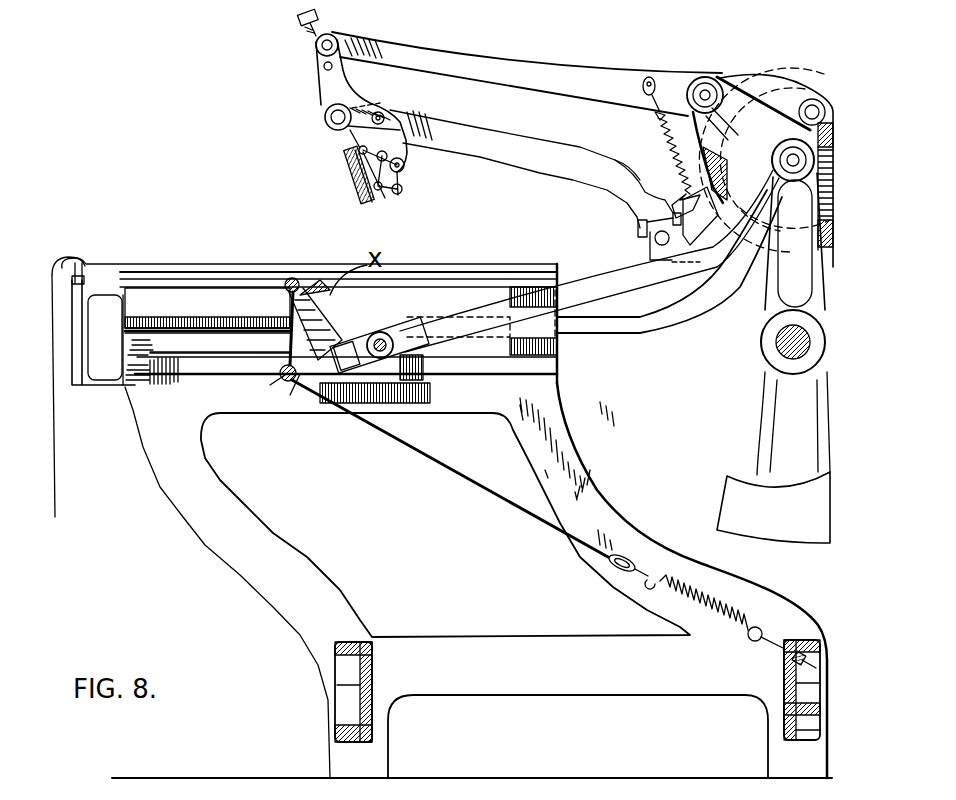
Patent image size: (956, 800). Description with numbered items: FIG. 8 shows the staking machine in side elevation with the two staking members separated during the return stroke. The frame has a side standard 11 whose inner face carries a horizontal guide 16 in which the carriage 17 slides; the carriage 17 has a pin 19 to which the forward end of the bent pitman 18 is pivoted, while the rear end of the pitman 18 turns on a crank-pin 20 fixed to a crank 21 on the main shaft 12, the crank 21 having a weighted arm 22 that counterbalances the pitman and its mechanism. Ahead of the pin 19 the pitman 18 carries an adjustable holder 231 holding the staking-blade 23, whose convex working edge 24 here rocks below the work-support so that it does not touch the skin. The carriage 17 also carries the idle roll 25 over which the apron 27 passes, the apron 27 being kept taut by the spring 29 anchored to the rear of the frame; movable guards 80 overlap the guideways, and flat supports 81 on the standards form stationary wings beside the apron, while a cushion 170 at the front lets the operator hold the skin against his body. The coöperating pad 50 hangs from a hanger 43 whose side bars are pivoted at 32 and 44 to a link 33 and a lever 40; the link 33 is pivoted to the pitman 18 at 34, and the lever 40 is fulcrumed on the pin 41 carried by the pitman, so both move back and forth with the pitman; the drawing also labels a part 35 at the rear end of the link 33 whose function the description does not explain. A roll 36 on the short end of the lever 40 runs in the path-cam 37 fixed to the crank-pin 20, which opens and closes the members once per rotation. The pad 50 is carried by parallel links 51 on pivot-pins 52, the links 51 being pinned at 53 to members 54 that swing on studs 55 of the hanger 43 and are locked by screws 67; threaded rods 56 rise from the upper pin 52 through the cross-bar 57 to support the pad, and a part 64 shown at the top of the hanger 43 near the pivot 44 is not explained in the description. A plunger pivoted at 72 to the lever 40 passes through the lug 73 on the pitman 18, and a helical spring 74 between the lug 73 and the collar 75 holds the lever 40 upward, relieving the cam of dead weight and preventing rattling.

The side standard 11 is at (578, 440).
The main shaft 12 is at (775, 343).
The guides 16 is at (165, 392).
The carriage 17 is at (380, 320).
The pitman 18 is at (610, 329).
The pin 19 is at (405, 360).
The crank-pin 20 is at (793, 155).
The crank 21 is at (795, 241).
The weighted arm 22 is at (766, 433).
The staking-blade 23 is at (298, 331).
The convex working edge 24 is at (312, 288).
The idle roll 25 is at (290, 282).
The apron 27 is at (298, 382).
The spring 29 is at (705, 625).
The pivot 32 is at (325, 118).
The link 33 is at (503, 160).
The pivot 34 is at (668, 248).
The bracket 35 is at (648, 248).
The roll 36 is at (810, 98).
The path-cam 37 is at (704, 248).
The lever 40 is at (562, 67).
The pin 41 is at (708, 92).
The hanger 43 is at (318, 88).
The pivot 44 is at (336, 40).
The pad 50 is at (363, 198).
The links 51 is at (392, 192).
The pivot-pins 52 is at (350, 162).
The pins 53 is at (402, 186).
The members 54 is at (413, 130).
The studs 55 is at (404, 166).
The threaded rods 56 is at (355, 138).
The cross-bar 57 is at (323, 66).
The screw 64 is at (300, 19).
The screws 67 is at (400, 104).
The pivot 72 is at (650, 77).
The lug 73 is at (630, 200).
The helical spring 74 is at (668, 152).
The nut or collar 75 is at (652, 128).
The guards 80 is at (215, 320).
The flat supports 81 is at (500, 275).
The cushion 170 is at (76, 270).
The holder 231 is at (275, 379).